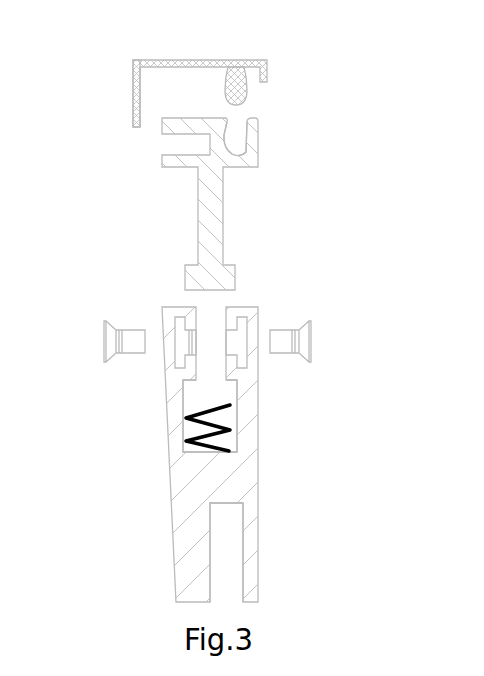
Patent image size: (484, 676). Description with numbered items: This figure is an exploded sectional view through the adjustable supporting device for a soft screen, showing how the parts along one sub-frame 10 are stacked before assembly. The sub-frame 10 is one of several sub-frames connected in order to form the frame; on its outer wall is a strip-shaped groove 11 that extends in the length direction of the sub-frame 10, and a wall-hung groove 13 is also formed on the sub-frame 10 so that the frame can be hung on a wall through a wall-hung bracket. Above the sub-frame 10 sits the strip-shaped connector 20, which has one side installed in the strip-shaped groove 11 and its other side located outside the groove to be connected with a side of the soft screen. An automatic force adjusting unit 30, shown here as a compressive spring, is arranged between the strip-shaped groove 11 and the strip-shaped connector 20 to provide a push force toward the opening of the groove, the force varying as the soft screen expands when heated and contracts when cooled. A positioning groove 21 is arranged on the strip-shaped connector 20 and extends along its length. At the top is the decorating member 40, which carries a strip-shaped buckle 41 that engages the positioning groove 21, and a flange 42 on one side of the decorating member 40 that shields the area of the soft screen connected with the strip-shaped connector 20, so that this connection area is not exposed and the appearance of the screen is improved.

The sub-frame 10 is at (242, 479).
The strip-shaped groove 11 is at (231, 392).
The wall-hung groove 13 is at (243, 553).
The strip-shaped connector 20 is at (207, 212).
The positioning groove 21 is at (243, 140).
The automatic force adjusting unit 30 is at (227, 432).
The decorating member 40 is at (205, 63).
The strip-shaped buckle 41 is at (247, 90).
The flange 42 is at (132, 95).